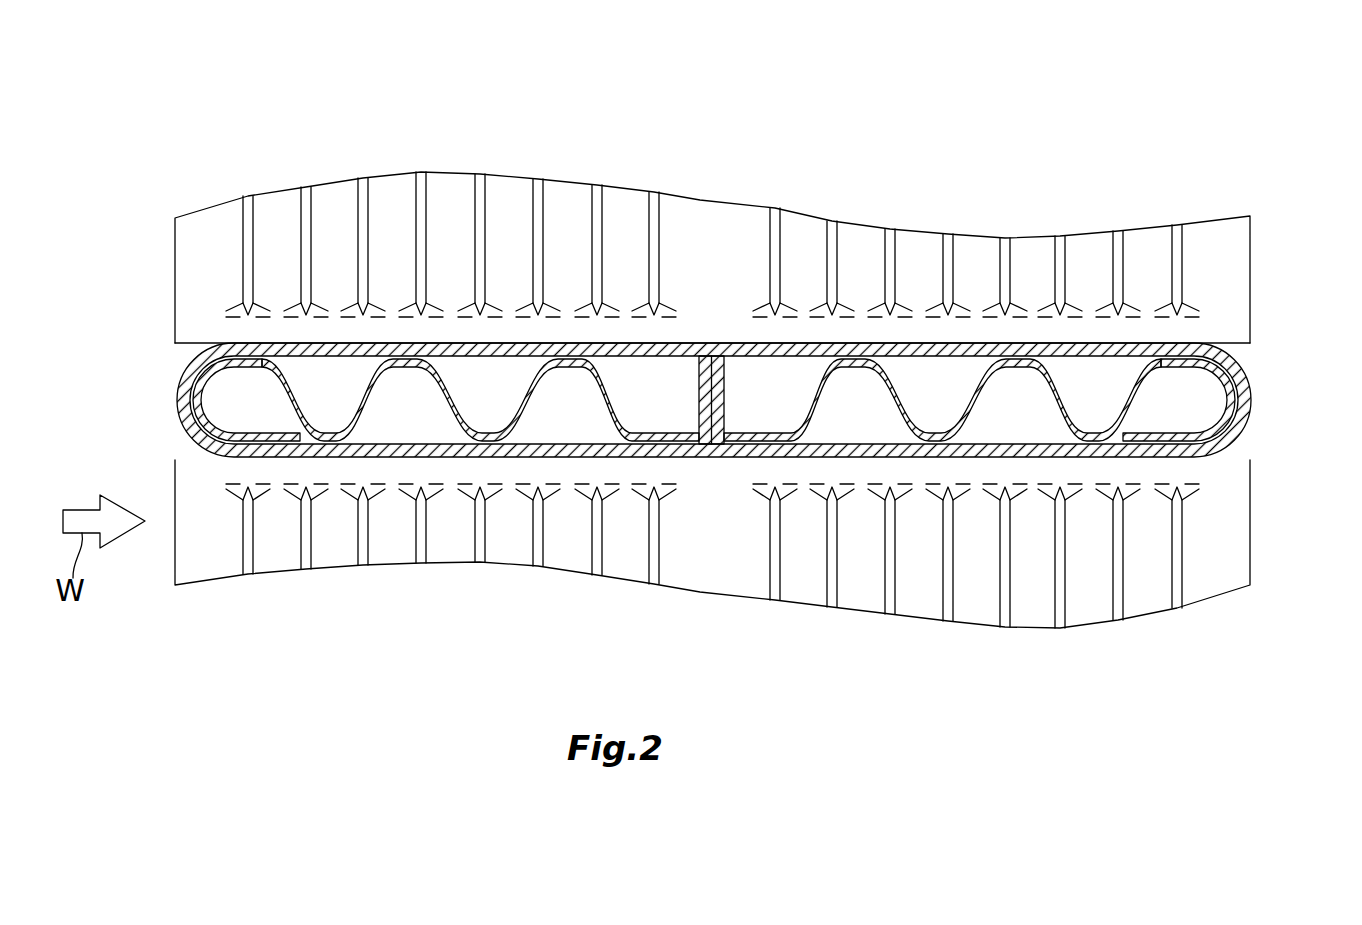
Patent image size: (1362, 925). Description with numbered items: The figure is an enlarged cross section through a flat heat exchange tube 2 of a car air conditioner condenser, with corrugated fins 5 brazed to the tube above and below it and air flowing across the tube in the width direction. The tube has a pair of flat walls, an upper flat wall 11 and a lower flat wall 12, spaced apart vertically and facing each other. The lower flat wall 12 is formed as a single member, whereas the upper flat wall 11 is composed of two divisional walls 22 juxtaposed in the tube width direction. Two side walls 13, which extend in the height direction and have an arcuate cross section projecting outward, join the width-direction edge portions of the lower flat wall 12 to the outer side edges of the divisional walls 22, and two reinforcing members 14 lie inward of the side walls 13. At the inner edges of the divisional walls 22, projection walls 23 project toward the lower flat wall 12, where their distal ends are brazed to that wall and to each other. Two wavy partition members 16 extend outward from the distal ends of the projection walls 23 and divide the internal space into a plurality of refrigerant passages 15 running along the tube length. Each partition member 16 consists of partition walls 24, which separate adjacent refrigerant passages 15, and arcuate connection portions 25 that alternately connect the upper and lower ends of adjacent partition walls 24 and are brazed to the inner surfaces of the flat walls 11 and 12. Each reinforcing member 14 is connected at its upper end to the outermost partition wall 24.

The flat heat exchange tube 2 is at (717, 395).
The corrugated fin 5 is at (730, 207).
The upper flat wall 11 is at (918, 343).
The lower flat wall 12 is at (627, 460).
The side wall 13 is at (184, 386).
The reinforcing member 14 is at (195, 403).
The refrigerant passage 15 is at (480, 403).
The wavy partition member 16 is at (450, 372).
The divisional wall 22 is at (279, 345).
The projection wall 23 is at (723, 440).
The partition wall 24 is at (597, 413).
The connection portion 25 is at (403, 345).